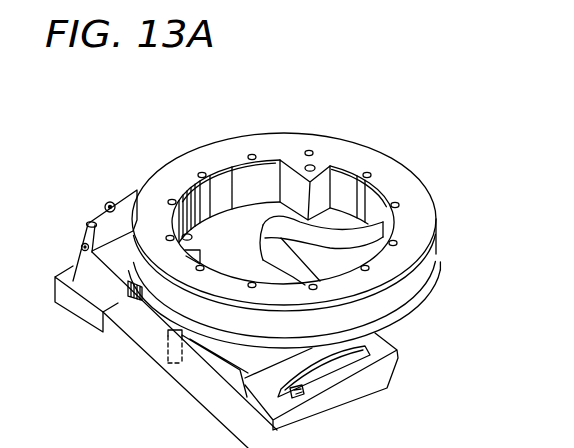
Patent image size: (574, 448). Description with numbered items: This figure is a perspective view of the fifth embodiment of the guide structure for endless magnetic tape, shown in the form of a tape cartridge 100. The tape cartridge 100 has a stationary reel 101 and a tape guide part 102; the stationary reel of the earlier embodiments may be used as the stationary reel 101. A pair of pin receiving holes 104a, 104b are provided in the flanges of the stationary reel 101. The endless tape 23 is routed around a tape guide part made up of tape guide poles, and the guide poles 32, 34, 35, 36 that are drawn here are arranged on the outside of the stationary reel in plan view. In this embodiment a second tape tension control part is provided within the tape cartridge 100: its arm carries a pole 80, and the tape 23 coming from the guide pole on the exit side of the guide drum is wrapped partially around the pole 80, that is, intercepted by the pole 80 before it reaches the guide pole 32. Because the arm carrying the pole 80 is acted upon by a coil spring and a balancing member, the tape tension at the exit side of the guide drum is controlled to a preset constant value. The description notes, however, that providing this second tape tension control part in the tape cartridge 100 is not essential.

The tape 23 is at (200, 387).
The guide pole 32 is at (385, 392).
The guide pole 34 is at (80, 244).
The guide pole 35 is at (87, 223).
The guide pole 36 is at (110, 203).
The pole 80 is at (300, 391).
The tape cartridge 100 is at (447, 191).
The stationary reel 101 is at (283, 133).
The tape guide part 102 is at (385, 340).
The pin receiving hole 104a is at (193, 238).
The pin receiving hole 104b is at (315, 166).